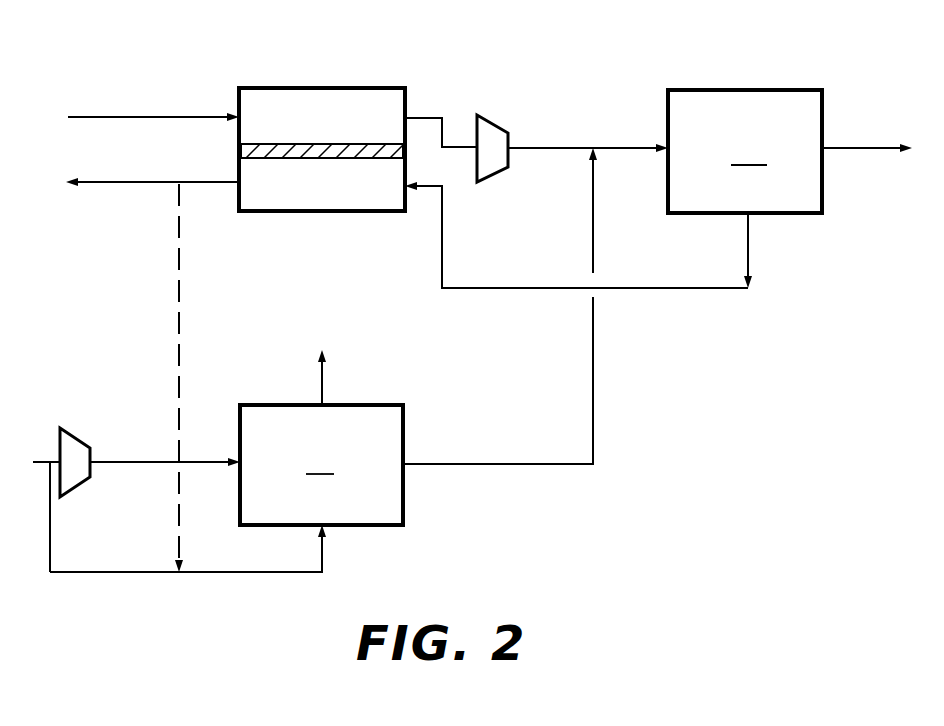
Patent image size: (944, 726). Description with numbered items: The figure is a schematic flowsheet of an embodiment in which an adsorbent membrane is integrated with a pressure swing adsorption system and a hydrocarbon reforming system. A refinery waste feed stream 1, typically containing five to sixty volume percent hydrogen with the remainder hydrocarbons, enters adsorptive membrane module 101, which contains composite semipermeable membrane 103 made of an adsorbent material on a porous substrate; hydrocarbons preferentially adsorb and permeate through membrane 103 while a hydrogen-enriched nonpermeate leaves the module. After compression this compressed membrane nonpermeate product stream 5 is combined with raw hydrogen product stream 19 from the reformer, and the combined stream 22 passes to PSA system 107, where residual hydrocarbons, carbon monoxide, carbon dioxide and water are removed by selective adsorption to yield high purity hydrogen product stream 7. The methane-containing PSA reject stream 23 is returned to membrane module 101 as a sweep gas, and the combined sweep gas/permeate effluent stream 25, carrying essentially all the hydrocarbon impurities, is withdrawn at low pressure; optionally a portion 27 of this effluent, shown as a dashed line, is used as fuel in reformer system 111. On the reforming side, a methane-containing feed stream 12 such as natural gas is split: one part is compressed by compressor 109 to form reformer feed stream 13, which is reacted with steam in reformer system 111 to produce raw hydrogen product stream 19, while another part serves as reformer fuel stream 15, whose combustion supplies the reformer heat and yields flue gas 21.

The feed stream 1 is at (146, 107).
The compressed membrane nonpermeate product stream 5 is at (546, 147).
The high purity hydrogen product stream 7 is at (847, 147).
The methane-containing feed stream 12 is at (44, 460).
The reformer feed stream 13 is at (160, 460).
The reformer fuel stream 15 is at (93, 571).
The raw hydrogen product stream 19 is at (500, 463).
The flue gas 21 is at (321, 381).
The combined stream 22 is at (628, 147).
The methane-containing PSA reject stream 23 is at (670, 288).
The combined sweep gas/permeate effluent stream 25 is at (148, 181).
The portion of combined sweep gas/permeate effluent stream 27 is at (181, 290).
The adsorptive membrane module 101 is at (328, 88).
The composite semipermeable membrane 103 is at (299, 144).
The PSA system 107 is at (745, 151).
The compressor 109 is at (86, 442).
The reformer system 111 is at (321, 465).